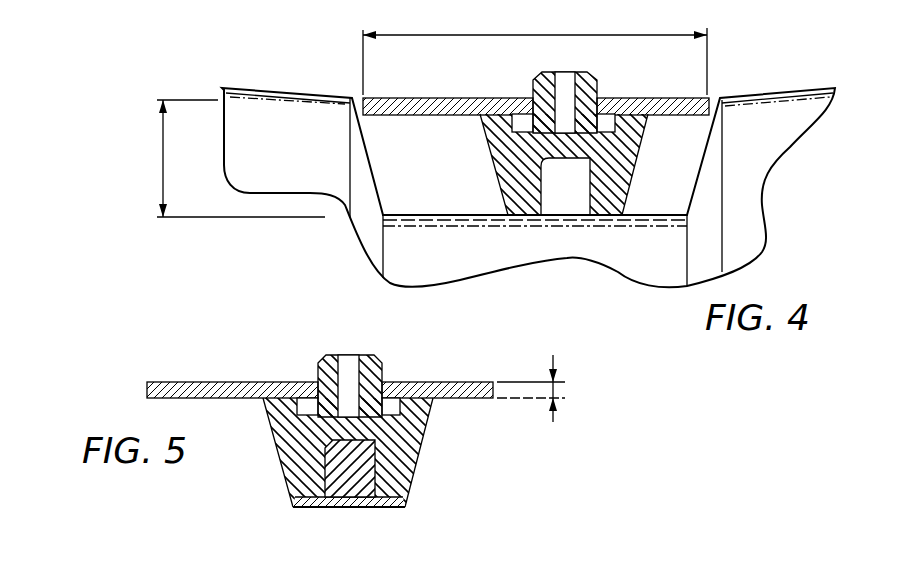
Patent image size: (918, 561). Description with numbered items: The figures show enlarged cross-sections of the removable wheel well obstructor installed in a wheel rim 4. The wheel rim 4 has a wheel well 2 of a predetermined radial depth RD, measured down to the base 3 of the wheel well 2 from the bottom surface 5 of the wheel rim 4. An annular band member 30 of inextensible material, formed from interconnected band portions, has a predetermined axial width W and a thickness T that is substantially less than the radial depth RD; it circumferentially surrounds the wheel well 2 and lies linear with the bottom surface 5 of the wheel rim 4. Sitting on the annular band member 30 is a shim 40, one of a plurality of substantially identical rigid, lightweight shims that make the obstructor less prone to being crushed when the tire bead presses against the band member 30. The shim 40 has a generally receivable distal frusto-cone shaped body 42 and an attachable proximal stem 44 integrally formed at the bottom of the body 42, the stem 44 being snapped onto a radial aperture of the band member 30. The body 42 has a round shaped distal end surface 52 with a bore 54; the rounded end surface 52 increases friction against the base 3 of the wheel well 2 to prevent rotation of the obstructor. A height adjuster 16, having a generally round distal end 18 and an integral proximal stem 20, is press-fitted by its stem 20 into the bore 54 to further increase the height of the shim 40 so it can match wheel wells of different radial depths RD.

In FIG. 4, the wheel well 2 is at (697, 187).
In FIG. 4, the base of the wheel well 3 is at (402, 215).
In FIG. 4, the wheel rim 4 is at (775, 252).
In FIG. 4, the bottom surface of the wheel rim 5 is at (275, 91).
In FIG. 5, the height adjuster 16 is at (283, 510).
In FIG. 5, the distal end of the height adjuster 18 is at (375, 508).
In FIG. 5, the proximal stem of the height adjuster 20 is at (330, 452).
In FIG. 4, the annular band member 30 is at (448, 96).
In FIG. 5, the annular band member 30 is at (212, 381).
In FIG. 4, the shim 40 is at (492, 160).
In FIG. 5, the shim 40 is at (318, 348).
In FIG. 4, the frusto-cone shaped body 42 is at (627, 162).
In FIG. 5, the frusto-cone shaped body 42 is at (413, 447).
In FIG. 4, the proximal stem of the shim 44 is at (590, 76).
In FIG. 5, the proximal stem of the shim 44 is at (372, 366).
In FIG. 4, the distal end surface 52 is at (610, 217).
In FIG. 4, the bore 54 is at (543, 188).
In FIG. 4, the axial width W is at (540, 34).
In FIG. 4, the radial depth RD is at (163, 155).
In FIG. 5, the thickness T is at (562, 390).